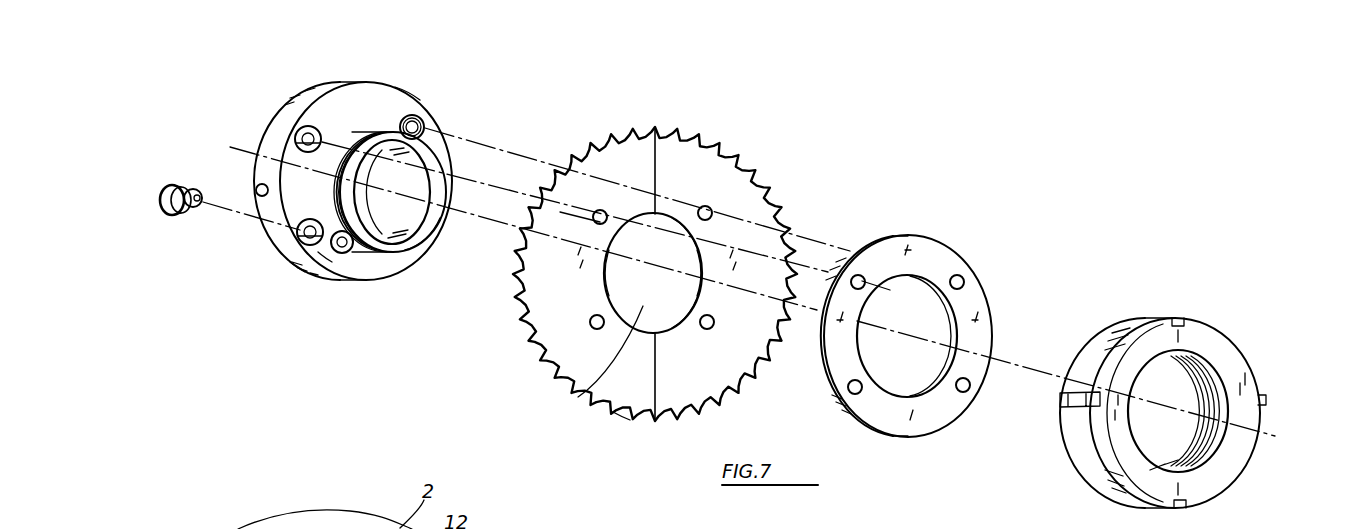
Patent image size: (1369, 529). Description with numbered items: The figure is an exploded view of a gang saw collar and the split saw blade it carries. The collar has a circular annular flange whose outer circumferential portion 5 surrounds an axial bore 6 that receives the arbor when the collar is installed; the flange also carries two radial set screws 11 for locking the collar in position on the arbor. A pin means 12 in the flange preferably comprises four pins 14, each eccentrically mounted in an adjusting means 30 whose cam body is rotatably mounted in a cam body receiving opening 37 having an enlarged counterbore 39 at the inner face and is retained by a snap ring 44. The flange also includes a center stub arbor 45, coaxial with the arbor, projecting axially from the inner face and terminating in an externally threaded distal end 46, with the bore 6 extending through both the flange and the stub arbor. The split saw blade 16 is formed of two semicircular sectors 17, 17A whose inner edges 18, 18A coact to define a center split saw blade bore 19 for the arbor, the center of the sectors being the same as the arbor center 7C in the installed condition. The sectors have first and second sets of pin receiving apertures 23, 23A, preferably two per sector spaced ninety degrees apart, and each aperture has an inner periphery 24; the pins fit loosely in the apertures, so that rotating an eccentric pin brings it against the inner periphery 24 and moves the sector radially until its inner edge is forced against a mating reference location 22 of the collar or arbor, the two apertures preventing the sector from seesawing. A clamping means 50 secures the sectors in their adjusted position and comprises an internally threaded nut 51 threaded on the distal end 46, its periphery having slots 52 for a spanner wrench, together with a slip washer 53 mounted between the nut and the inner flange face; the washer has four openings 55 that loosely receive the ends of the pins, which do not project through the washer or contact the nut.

The outer circumferential portion 5 is at (285, 247).
The axial bore 6 is at (422, 228).
The arbor center 7C is at (662, 263).
The radial set screws 11 is at (339, 82).
The pin means 12 is at (437, 124).
The pins 14 is at (420, 122).
The split saw blade 16 is at (711, 150).
The sector 17 is at (397, 88).
The sector 17A is at (697, 393).
The inner edge 18 is at (605, 292).
The inner edge 18A is at (702, 300).
The center split saw blade bore 19 is at (576, 397).
The reference location 22 is at (313, 198).
The pin receiving apertures 23 is at (604, 211).
The pin receiving apertures 23A is at (711, 211).
The inner periphery 24 is at (590, 224).
The adjusting means 30 is at (150, 204).
The cam body receiving openings 37 is at (292, 262).
The counterbore 39 is at (322, 254).
The snap ring 44 is at (364, 270).
The center stub arbor 45 is at (360, 132).
The externally threaded distal end 46 is at (403, 248).
The clamping means 50 is at (1247, 350).
The internally threaded nut 51 is at (1233, 477).
The slots 52 is at (1180, 316).
The slip washer 53 is at (915, 413).
The openings 55 is at (963, 280).